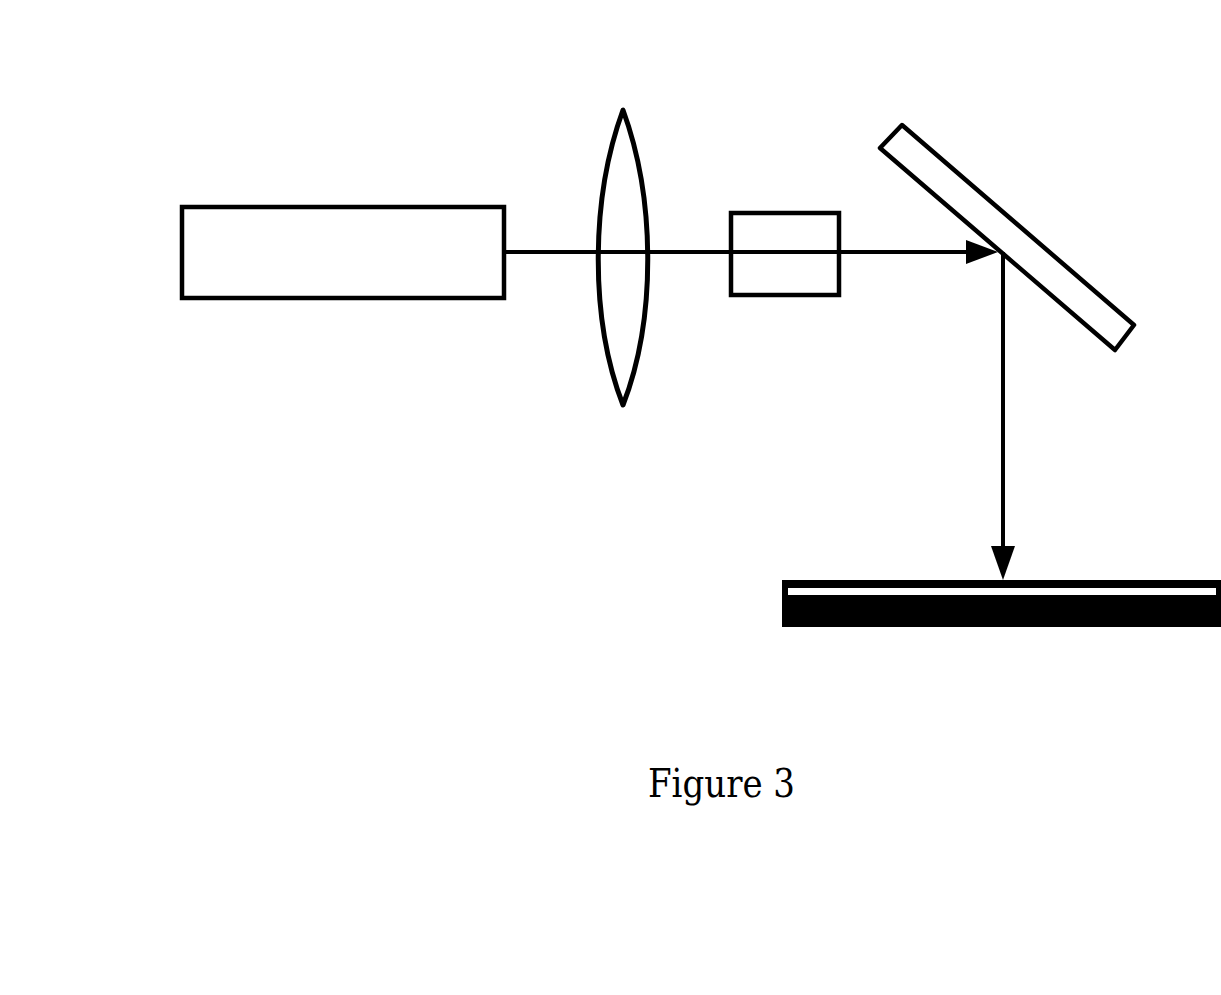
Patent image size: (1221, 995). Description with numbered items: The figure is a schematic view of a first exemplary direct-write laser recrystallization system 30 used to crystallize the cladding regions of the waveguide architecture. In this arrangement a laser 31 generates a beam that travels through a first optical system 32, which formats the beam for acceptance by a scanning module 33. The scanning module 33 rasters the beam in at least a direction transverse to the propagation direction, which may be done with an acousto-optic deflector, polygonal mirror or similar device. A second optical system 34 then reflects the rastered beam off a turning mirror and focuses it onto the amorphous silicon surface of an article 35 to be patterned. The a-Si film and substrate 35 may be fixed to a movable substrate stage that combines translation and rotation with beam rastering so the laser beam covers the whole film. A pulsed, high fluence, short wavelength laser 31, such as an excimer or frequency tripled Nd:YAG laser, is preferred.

The laser recrystallization system 30 is at (488, 530).
The laser 31 is at (303, 207).
The first optical system 32 is at (623, 110).
The scanning module 33 is at (787, 212).
The second optical system 34 is at (1057, 253).
The article 35 is at (1088, 627).